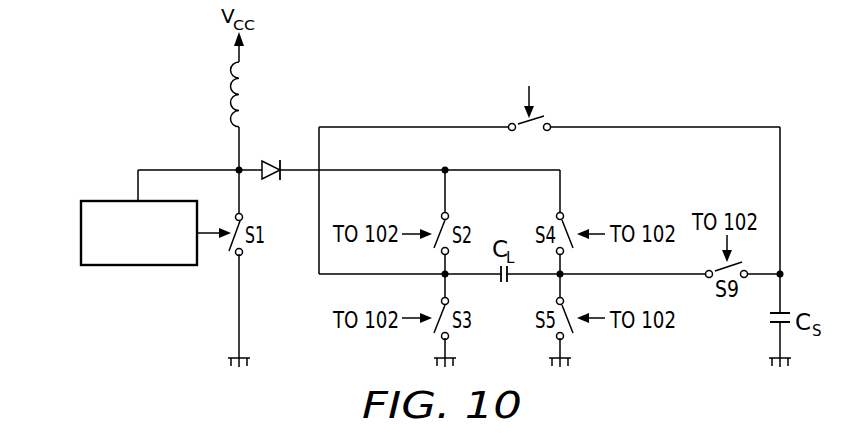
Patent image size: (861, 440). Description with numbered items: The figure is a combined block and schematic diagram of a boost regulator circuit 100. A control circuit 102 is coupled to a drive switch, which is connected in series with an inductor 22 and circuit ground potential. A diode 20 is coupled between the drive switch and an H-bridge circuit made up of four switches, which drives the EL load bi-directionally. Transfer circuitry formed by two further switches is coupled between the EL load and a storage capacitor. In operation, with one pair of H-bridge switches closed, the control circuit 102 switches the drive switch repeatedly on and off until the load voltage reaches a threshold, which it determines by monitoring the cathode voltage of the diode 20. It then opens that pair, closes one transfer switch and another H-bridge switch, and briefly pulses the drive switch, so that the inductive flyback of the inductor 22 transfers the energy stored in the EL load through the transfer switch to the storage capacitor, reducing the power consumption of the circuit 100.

The diode 20 is at (270, 160).
The inductor 22 is at (221, 88).
The boost regulator circuit 100 is at (668, 80).
The control circuit 102 is at (79, 232).